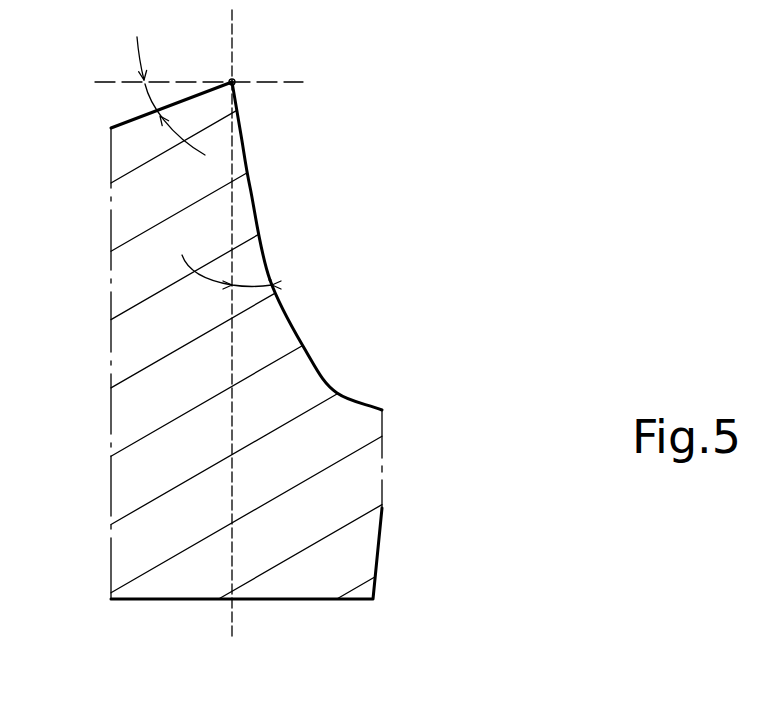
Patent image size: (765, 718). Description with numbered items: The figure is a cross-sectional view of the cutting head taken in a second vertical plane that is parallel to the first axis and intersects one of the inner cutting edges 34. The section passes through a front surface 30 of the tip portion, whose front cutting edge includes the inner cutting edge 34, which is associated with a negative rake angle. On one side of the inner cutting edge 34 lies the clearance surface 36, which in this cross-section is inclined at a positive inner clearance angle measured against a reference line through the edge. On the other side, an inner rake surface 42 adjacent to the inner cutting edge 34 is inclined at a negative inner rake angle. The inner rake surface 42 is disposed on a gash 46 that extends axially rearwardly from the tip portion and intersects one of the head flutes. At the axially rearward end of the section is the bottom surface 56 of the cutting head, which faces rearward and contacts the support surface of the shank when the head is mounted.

The front surface 30 is at (127, 120).
The inner cutting edge 34 is at (234, 81).
The clearance surface 36 is at (192, 97).
The inner rake surface 42 is at (251, 187).
The gash 46 is at (308, 355).
The bottom surface 56 is at (327, 601).